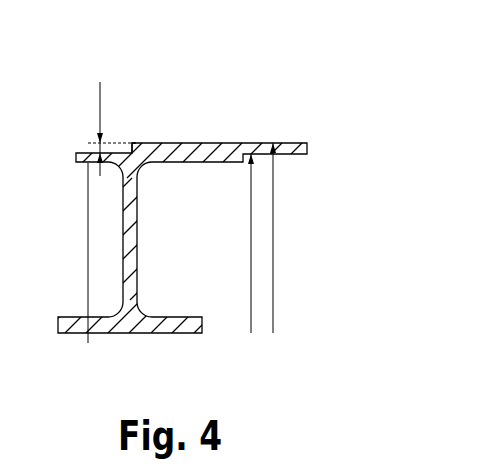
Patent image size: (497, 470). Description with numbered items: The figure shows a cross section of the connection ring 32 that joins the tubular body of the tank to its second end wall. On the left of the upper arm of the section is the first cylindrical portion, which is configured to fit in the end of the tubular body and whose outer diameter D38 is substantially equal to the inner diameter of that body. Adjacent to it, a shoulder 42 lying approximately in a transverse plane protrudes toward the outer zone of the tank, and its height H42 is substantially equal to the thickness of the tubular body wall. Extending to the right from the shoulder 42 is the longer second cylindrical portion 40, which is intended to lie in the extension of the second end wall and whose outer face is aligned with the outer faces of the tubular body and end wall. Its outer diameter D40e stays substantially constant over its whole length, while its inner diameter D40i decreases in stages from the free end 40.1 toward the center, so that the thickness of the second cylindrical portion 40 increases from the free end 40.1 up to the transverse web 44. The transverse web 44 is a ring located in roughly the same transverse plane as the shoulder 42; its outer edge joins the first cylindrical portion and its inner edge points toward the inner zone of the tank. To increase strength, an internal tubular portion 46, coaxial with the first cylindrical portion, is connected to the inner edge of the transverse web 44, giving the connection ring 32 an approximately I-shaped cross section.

The connection ring 32 is at (238, 89).
The second cylindrical portion 40 is at (248, 132).
The free end 40.1 is at (303, 143).
The shoulder 42 is at (132, 143).
The transverse web 44 is at (145, 211).
The internal tubular portion 46 is at (145, 343).
The height of the shoulder H42 is at (108, 116).
The outer diameter of the first cylindrical portion D38 is at (61, 253).
The inner diameter of the second cylindrical portion D40i is at (223, 243).
The outer diameter of the second cylindrical portion D40e is at (308, 238).